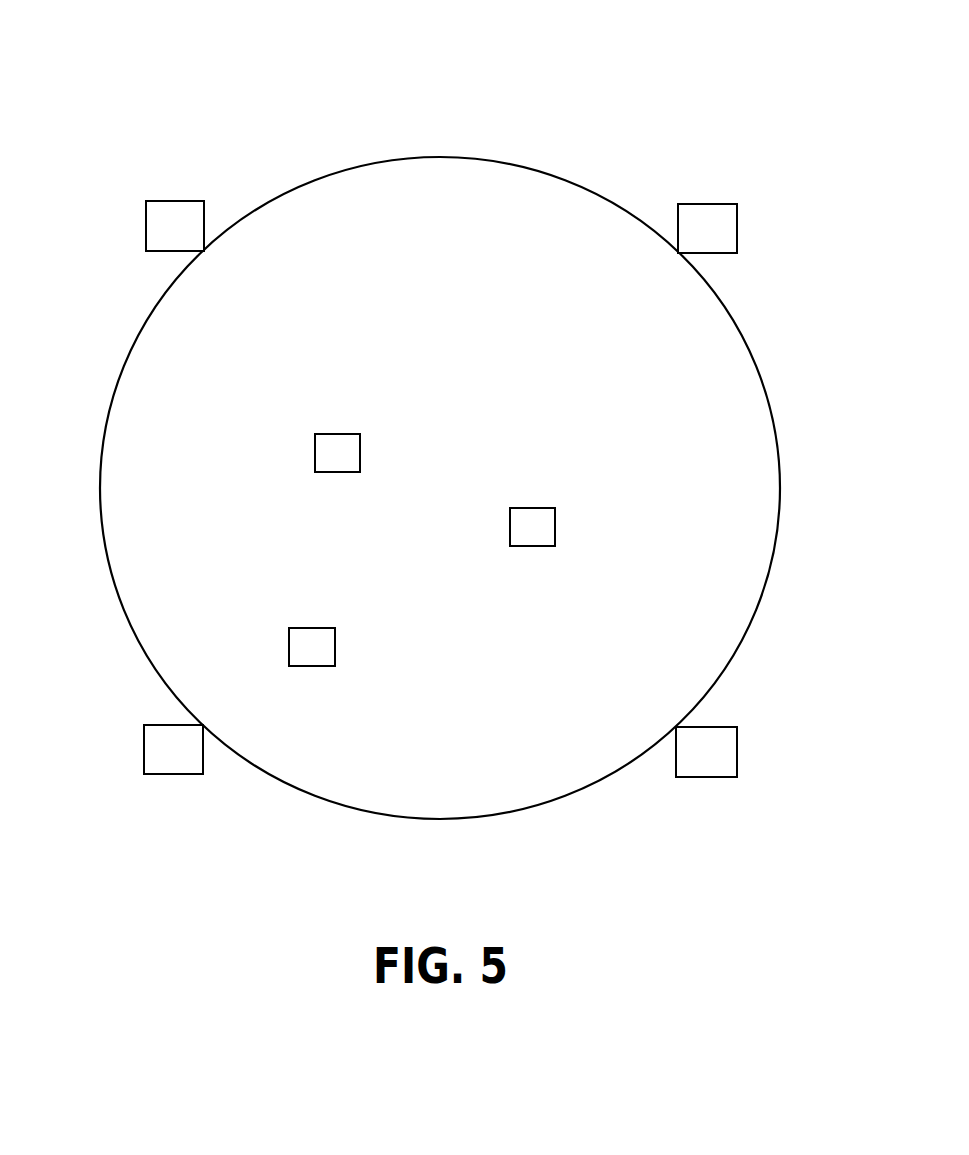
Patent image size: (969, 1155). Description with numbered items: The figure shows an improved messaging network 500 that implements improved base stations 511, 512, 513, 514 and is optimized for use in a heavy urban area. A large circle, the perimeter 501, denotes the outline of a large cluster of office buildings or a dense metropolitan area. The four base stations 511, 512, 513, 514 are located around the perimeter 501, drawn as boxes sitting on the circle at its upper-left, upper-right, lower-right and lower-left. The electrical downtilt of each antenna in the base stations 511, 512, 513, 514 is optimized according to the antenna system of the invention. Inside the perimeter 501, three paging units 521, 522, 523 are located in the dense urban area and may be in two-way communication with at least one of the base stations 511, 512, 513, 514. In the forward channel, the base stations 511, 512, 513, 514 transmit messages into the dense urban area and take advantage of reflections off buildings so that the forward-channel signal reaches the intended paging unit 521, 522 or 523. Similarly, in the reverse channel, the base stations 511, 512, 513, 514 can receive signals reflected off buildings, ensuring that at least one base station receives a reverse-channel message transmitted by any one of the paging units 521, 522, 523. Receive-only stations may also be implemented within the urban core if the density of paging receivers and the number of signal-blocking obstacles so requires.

The improved messaging network 500 is at (440, 411).
The perimeter 501 is at (440, 157).
The improved base station 511 is at (146, 220).
The improved base station 512 is at (737, 226).
The improved base station 513 is at (737, 750).
The improved base station 514 is at (144, 745).
The paging unit 521 is at (340, 434).
The paging unit 522 is at (535, 508).
The paging unit 523 is at (315, 628).